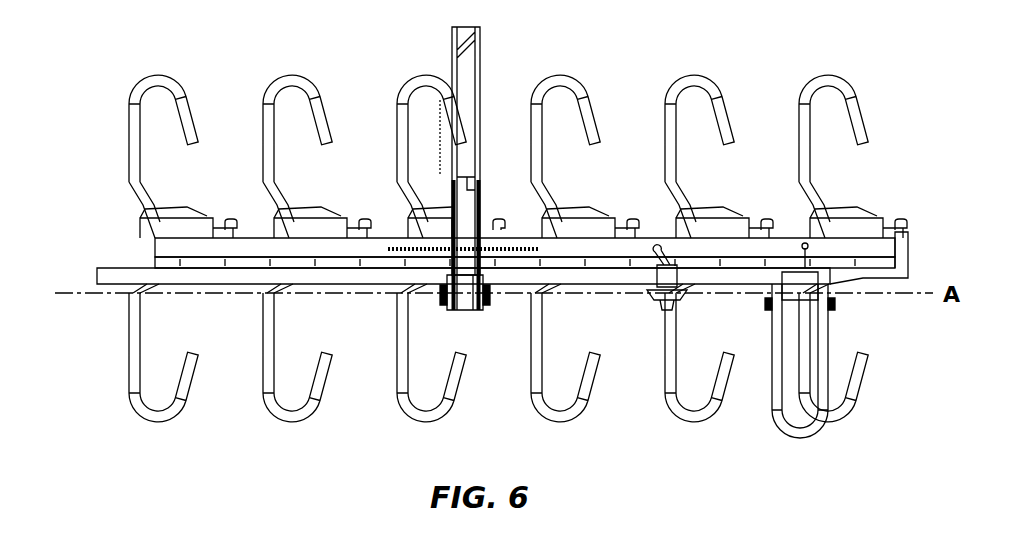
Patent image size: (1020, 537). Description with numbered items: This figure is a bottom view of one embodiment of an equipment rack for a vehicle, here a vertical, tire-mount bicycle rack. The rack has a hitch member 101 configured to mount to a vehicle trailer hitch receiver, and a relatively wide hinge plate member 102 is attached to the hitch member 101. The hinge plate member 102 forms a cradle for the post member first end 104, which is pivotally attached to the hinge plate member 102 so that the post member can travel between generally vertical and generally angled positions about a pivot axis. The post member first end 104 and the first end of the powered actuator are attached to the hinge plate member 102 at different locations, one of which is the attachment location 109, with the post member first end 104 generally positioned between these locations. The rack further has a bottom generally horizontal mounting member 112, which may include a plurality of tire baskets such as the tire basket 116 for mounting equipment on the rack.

The hitch member 101 is at (462, 67).
The hinge plate member 102 is at (450, 207).
The post member first end 104 is at (428, 305).
The attachment location 109 is at (488, 305).
The bottom generally horizontal mounting member 112 is at (107, 275).
The tire basket 116 is at (848, 82).